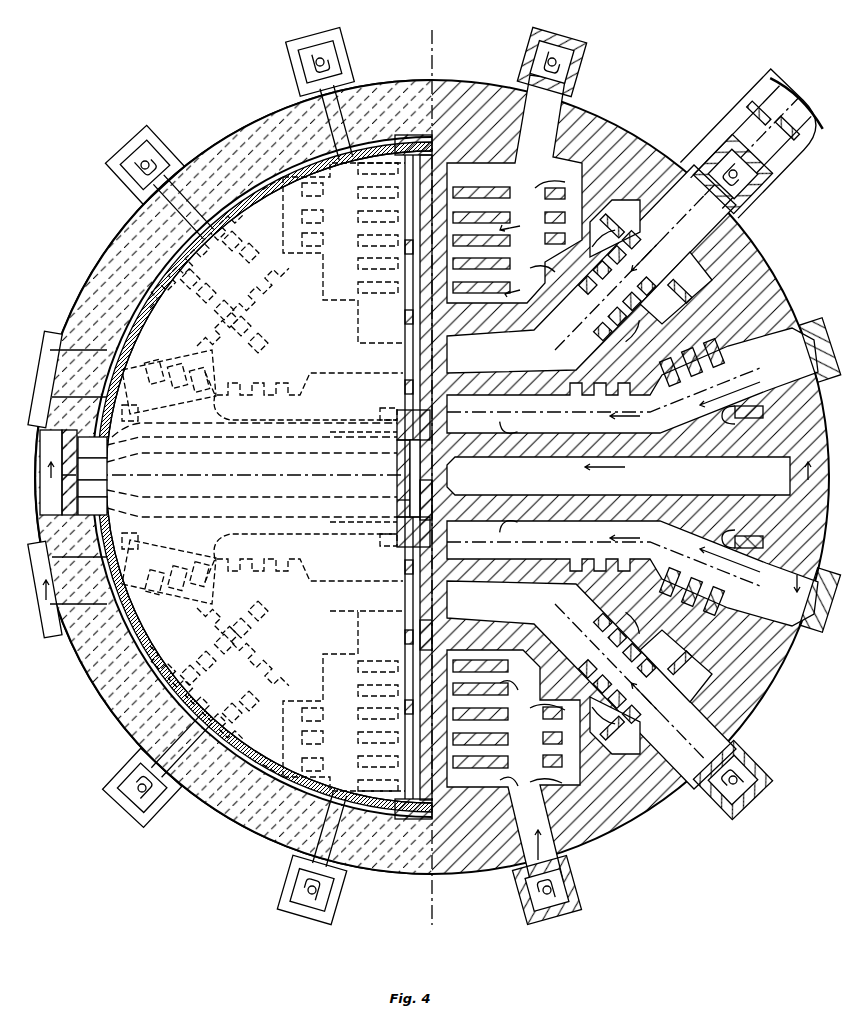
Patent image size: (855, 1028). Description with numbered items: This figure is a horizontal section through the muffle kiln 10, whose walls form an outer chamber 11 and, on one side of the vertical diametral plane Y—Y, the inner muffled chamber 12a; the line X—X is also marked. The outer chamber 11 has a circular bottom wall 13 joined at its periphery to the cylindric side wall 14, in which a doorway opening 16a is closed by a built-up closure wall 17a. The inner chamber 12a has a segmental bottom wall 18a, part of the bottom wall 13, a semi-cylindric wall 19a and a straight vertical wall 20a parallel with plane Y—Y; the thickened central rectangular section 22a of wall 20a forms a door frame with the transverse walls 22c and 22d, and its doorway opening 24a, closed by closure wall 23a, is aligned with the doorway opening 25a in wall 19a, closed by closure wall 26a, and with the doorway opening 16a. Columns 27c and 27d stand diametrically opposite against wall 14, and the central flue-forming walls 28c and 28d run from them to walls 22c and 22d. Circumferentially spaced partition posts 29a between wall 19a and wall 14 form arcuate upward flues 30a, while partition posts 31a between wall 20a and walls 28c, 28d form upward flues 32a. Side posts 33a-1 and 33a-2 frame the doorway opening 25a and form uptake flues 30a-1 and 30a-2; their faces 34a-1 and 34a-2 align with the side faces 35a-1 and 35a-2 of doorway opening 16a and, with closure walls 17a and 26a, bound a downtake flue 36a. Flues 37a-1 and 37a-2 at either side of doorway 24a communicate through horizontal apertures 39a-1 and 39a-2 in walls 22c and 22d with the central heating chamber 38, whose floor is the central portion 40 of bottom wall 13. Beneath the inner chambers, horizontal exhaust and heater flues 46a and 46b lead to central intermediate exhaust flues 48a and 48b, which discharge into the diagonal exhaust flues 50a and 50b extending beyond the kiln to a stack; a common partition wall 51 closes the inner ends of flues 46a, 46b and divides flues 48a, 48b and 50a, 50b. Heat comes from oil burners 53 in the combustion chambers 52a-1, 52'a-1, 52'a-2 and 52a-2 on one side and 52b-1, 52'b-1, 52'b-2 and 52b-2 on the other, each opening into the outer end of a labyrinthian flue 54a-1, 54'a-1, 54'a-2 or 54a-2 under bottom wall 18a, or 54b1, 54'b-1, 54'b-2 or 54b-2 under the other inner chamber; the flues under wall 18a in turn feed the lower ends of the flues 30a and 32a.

The muffle kiln 10 is at (622, 128).
The outer chamber 11 is at (202, 244).
The inner chamber 12a is at (241, 284).
The circular bottom wall 13 is at (388, 133).
The cylindric side wall 14 is at (238, 135).
The doorway opening 16a is at (58, 472).
The closure wall 17a is at (92, 447).
The segmental bottom wall 18a is at (231, 667).
The semi-cylindric wall 19a is at (232, 660).
The straight vertical wall 20a is at (405, 596).
The central rectangular section 22a is at (397, 526).
The door frame wall 22c is at (397, 444).
The door frame wall 22d is at (431, 500).
The closure wall 23a is at (410, 484).
The doorway opening 24a is at (397, 504).
The doorway opening 25a is at (254, 434).
The closure wall 26a is at (92, 477).
The column 27c is at (396, 152).
The column 27d is at (398, 802).
The central vertical flue forming wall 28c is at (420, 352).
The central vertical flue forming wall 28d is at (420, 634).
The partition posts 29a is at (272, 228).
The arcuate upwardly extending flues 30a is at (318, 178).
The uptake flue 30a-1 is at (126, 380).
The uptake flue 30a-2 is at (126, 574).
The partition posts 31a is at (405, 251).
The upwardly extending flues 32a is at (405, 275).
The side post 33a-1 is at (148, 410).
The side post 33a-2 is at (152, 532).
The face 34a-1 is at (130, 446).
The face 34a-2 is at (115, 508).
The side face 35a-1 is at (120, 462).
The side face 35a-2 is at (130, 494).
The downtake flue 36a is at (92, 506).
The flue 37a-1 is at (374, 416).
The flue 37a-2 is at (374, 544).
The central heating chamber 38 is at (397, 466).
The horizontally extending apertures 39a-1 is at (363, 427).
The horizontally extending apertures 39a-2 is at (357, 523).
The central portion of the bottom wall 40 is at (458, 425).
The exhaust and heater flue 46a is at (318, 455).
The exhaust and heater flue 46b is at (630, 527).
The intermediate exhaust flue 48a is at (478, 418).
The intermediate exhaust flue 48b is at (470, 480).
The exhaust flue 50a is at (790, 88).
The exhaust flue 50b is at (790, 130).
The common partition wall 51 is at (797, 105).
The combustion chamber 52a-1 is at (300, 52).
The combustion chamber 52a-2 is at (290, 890).
The combustion chamber 52'a-1 is at (167, 186).
The combustion chamber 52'a-2 is at (165, 763).
The combustion chamber 52b-1 is at (525, 50).
The combustion chamber 52b-2 is at (535, 910).
The combustion chamber 52'b-1 is at (750, 179).
The combustion chamber 52'b-2 is at (728, 793).
The oil burner 53 is at (330, 58).
The labyrinthian flue 54b1 is at (514, 189).
The labyrinthian flue 54b-2 is at (513, 767).
The labyrinthian flue 54'b-1 is at (598, 308).
The labyrinthian flue 54'b-2 is at (598, 646).
The labyrinthian flue 54a-1 is at (330, 290).
The labyrinthian flue 54a-2 is at (328, 665).
The labyrinthian flue 54'a-1 is at (304, 383).
The labyrinthian flue 54'a-2 is at (304, 570).
The section axis X is at (426, 467).
The vertical diametral plane Y is at (432, 475).